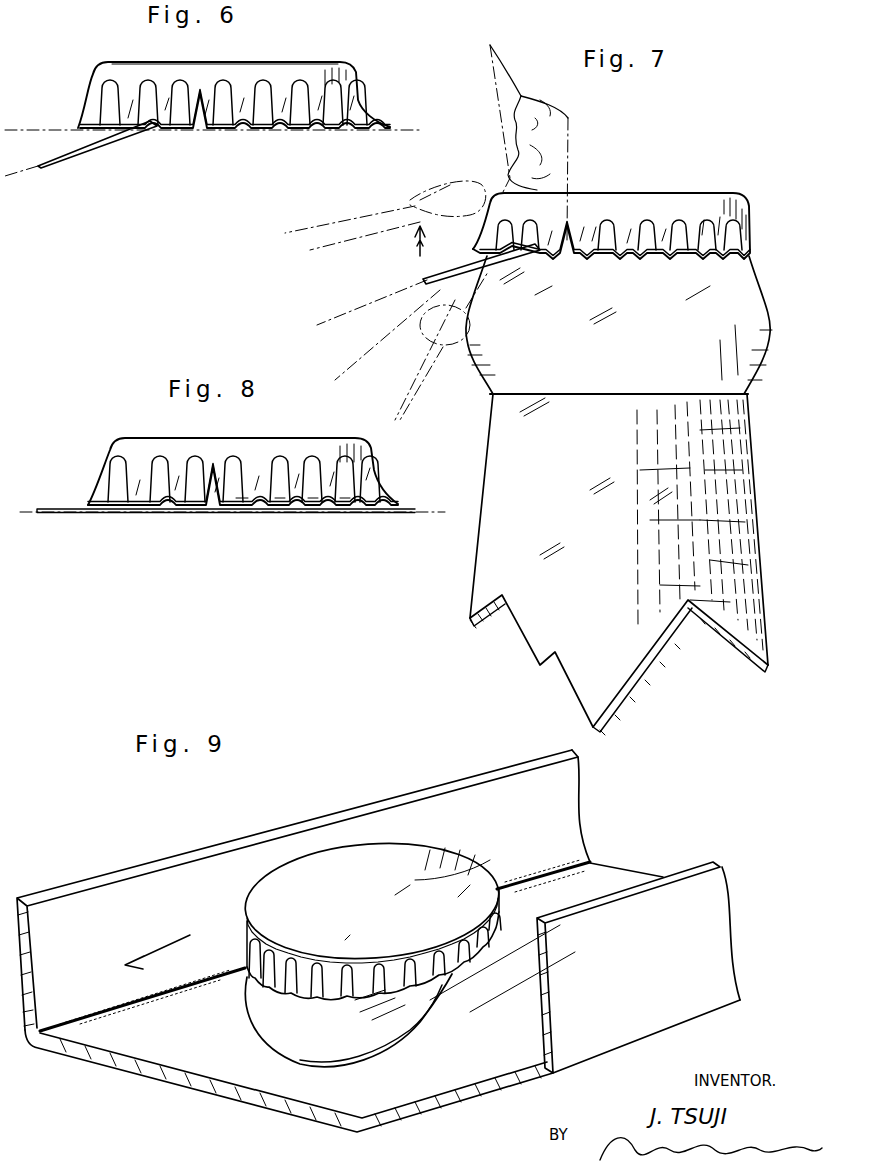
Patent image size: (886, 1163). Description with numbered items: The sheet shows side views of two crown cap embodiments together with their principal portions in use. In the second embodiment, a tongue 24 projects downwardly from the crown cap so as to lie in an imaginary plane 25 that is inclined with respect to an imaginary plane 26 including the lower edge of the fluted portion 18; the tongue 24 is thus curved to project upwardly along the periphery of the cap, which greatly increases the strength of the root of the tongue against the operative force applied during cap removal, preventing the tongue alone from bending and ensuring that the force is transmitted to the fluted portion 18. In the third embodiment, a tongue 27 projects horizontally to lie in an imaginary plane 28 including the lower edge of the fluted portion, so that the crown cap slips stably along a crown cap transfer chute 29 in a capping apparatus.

In FIG. 6, the fluted portion 18 is at (380, 122).
In FIG. 7, the fluted portion 18 is at (752, 243).
In FIG. 8, the fluted portion 18 is at (243, 471).
In FIG. 9, the fluted portion 18 is at (371, 917).
In FIG. 6, the tongue 24 is at (88, 140).
In FIG. 7, the tongue 24 is at (432, 280).
In FIG. 6, the imaginary plane 25 is at (344, 60).
In FIG. 6, the imaginary plane 26 is at (413, 133).
In FIG. 8, the tongue 27 is at (67, 515).
In FIG. 9, the tongue 27 is at (367, 1040).
In FIG. 8, the imaginary plane 28 is at (414, 515).
In FIG. 9, the crown cap transfer chute 29 is at (255, 853).